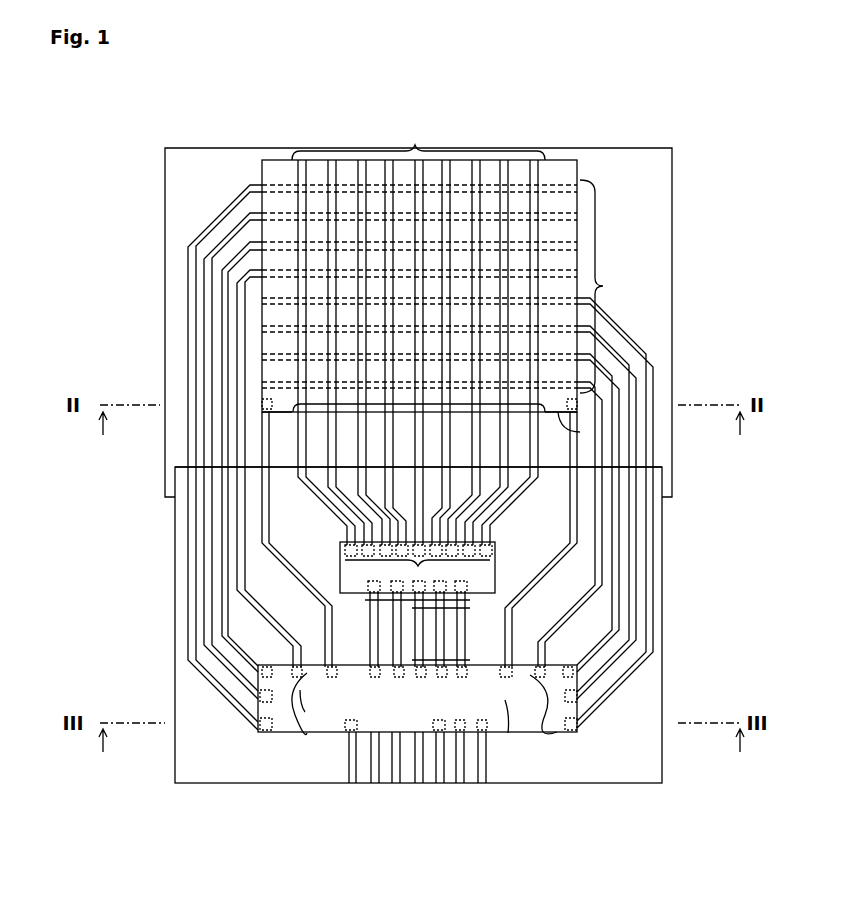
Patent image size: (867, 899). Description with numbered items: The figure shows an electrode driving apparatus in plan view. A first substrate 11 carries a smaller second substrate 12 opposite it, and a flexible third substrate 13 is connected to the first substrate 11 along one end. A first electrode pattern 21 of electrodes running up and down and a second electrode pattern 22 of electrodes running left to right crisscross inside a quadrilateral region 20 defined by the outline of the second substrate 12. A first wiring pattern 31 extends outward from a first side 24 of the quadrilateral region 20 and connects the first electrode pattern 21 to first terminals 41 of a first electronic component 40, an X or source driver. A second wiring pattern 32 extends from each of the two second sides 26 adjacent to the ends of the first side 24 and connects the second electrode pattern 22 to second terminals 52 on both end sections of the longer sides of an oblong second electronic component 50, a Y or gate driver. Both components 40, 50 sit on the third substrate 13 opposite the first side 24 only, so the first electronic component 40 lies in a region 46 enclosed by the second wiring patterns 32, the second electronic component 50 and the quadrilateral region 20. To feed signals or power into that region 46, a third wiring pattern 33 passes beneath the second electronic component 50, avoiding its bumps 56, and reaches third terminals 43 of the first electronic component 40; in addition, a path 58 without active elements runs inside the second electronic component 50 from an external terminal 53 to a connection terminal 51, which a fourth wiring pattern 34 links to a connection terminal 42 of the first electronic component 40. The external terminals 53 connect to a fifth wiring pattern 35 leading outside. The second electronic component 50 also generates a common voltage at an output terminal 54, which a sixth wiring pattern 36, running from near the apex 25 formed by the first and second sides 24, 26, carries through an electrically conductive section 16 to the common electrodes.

The first substrate 11 is at (657, 200).
The second substrate 12 is at (568, 167).
The third substrate 13 is at (662, 772).
The electrically conductive section 16 is at (262, 404).
The quadrilateral region 20 is at (258, 367).
The first electrode pattern 21 is at (418, 328).
The second electrode pattern 22 is at (607, 286).
The first side 24 is at (590, 432).
The apex 25 is at (263, 410).
The second side 26 is at (258, 336).
The first wiring pattern 31 is at (418, 403).
The second wiring pattern 32 is at (268, 178).
The third wiring pattern 33 is at (373, 780).
The fourth wiring pattern 34 is at (440, 620).
The fifth wiring pattern 35 is at (408, 790).
The sixth wiring pattern 36 is at (340, 588).
The first electronic component 40 is at (345, 572).
The first terminal 41 is at (495, 557).
The connection terminal 42 is at (460, 627).
The third terminals 43 is at (313, 712).
The region 46 is at (418, 501).
The second electronic component 50 is at (315, 722).
The connection terminals 51 is at (470, 655).
The second terminal 52 is at (297, 735).
The external terminals 53 is at (505, 678).
The output terminal 54 is at (260, 688).
The bumps 56 is at (347, 735).
The path 58 is at (508, 733).